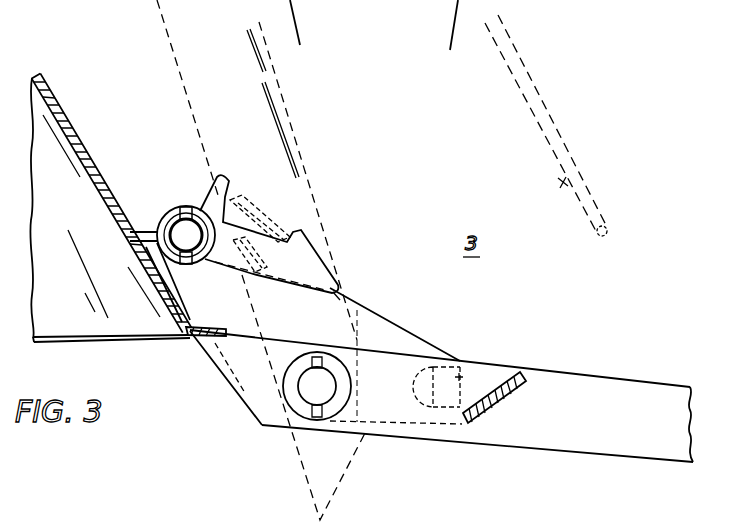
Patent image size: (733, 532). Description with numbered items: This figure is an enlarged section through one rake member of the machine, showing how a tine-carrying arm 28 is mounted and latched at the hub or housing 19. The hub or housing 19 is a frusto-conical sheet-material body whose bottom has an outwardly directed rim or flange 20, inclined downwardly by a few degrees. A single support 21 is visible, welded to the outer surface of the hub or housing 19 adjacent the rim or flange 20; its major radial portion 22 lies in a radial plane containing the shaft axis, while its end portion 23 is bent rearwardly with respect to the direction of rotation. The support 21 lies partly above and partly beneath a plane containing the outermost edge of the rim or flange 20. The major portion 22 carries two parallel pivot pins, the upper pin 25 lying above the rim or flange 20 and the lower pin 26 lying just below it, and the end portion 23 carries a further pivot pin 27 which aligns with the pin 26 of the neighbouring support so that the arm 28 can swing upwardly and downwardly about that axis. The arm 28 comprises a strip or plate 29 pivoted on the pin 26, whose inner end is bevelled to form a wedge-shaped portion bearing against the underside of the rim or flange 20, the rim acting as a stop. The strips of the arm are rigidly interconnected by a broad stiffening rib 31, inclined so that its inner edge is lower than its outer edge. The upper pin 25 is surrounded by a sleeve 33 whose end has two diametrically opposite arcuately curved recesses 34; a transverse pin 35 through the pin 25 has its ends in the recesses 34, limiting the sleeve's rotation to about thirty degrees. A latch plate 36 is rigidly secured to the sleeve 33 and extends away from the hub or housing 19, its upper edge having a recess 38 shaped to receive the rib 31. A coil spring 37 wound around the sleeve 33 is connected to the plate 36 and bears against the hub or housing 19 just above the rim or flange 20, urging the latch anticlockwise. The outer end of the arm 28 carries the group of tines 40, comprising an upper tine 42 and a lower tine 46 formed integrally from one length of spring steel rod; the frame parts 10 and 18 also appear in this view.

The apparatus frame member 10 is at (288, 12).
The frame member 18 is at (453, 6).
The hub or housing 19 is at (56, 98).
The rim or flange 20 is at (203, 339).
The support 21 is at (386, 313).
The major radial portion 22 is at (325, 312).
The end portion 23 is at (423, 345).
The pivot pin 25 is at (182, 230).
The pivot pin 26 is at (303, 382).
The pivot pin 27 is at (468, 375).
The arm 28 is at (167, 43).
The strip or plate 29 is at (613, 447).
The stiffening rib 31 is at (240, 200).
The sleeve 33 is at (128, 257).
The arcuately curved recess 34 is at (180, 207).
The transverse pin 35 is at (187, 206).
The plate 36 is at (290, 283).
The coil spring 37 is at (130, 235).
The recess 38 is at (258, 227).
The group of tines 40 is at (563, 131).
The upper tine 42 is at (560, 183).
The lower tine 46 is at (303, 152).